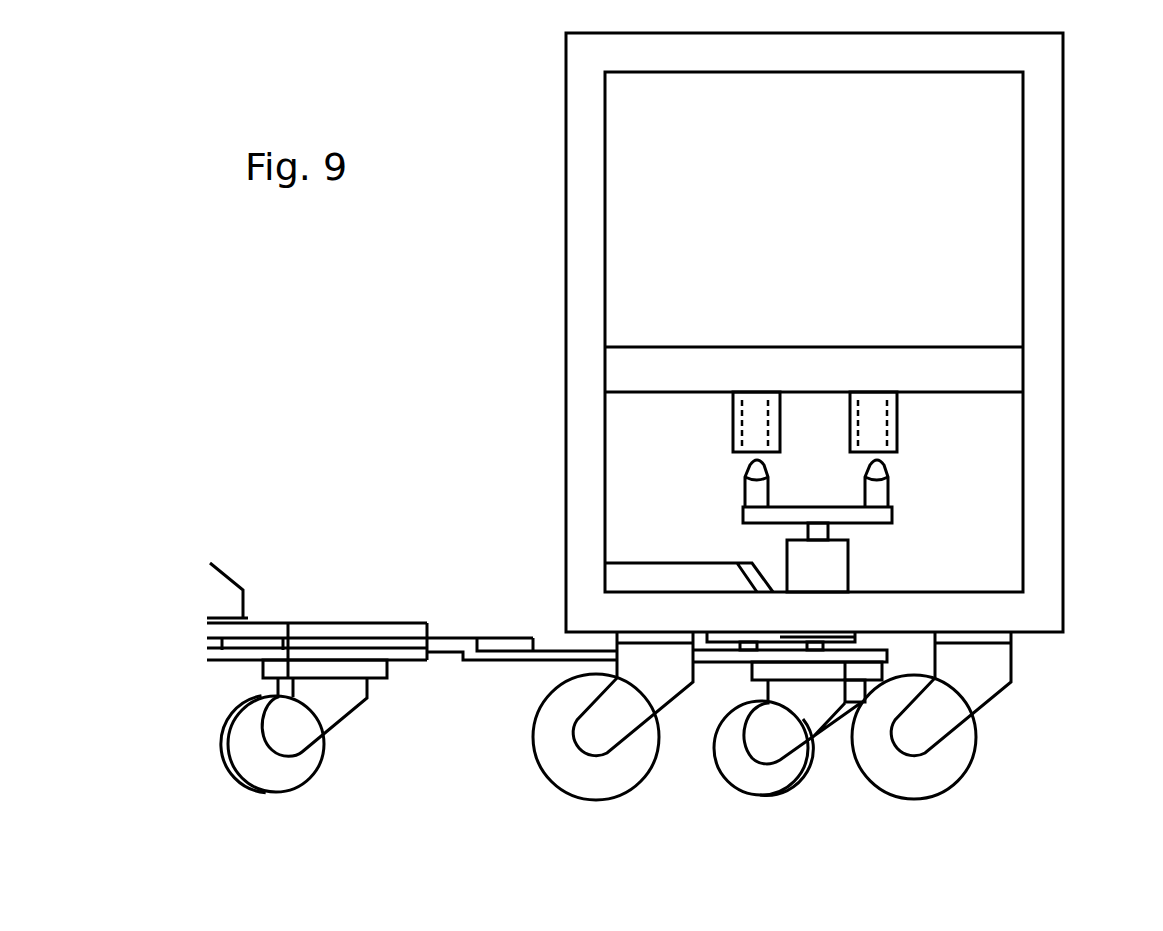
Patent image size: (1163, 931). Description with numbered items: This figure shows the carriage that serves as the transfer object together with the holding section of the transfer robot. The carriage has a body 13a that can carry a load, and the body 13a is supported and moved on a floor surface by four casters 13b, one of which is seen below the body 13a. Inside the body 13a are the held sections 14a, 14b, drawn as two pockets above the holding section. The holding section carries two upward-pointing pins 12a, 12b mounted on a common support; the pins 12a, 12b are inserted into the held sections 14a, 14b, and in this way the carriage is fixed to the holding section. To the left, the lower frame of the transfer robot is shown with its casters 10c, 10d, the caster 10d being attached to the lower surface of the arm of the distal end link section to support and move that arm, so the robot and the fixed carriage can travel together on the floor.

The caster 10c is at (300, 770).
The caster 10d is at (755, 772).
The pin 12a is at (755, 492).
The pin 12b is at (877, 490).
The body 13a is at (587, 141).
The caster 13b is at (902, 778).
The held section 14a is at (757, 402).
The held section 14b is at (875, 402).